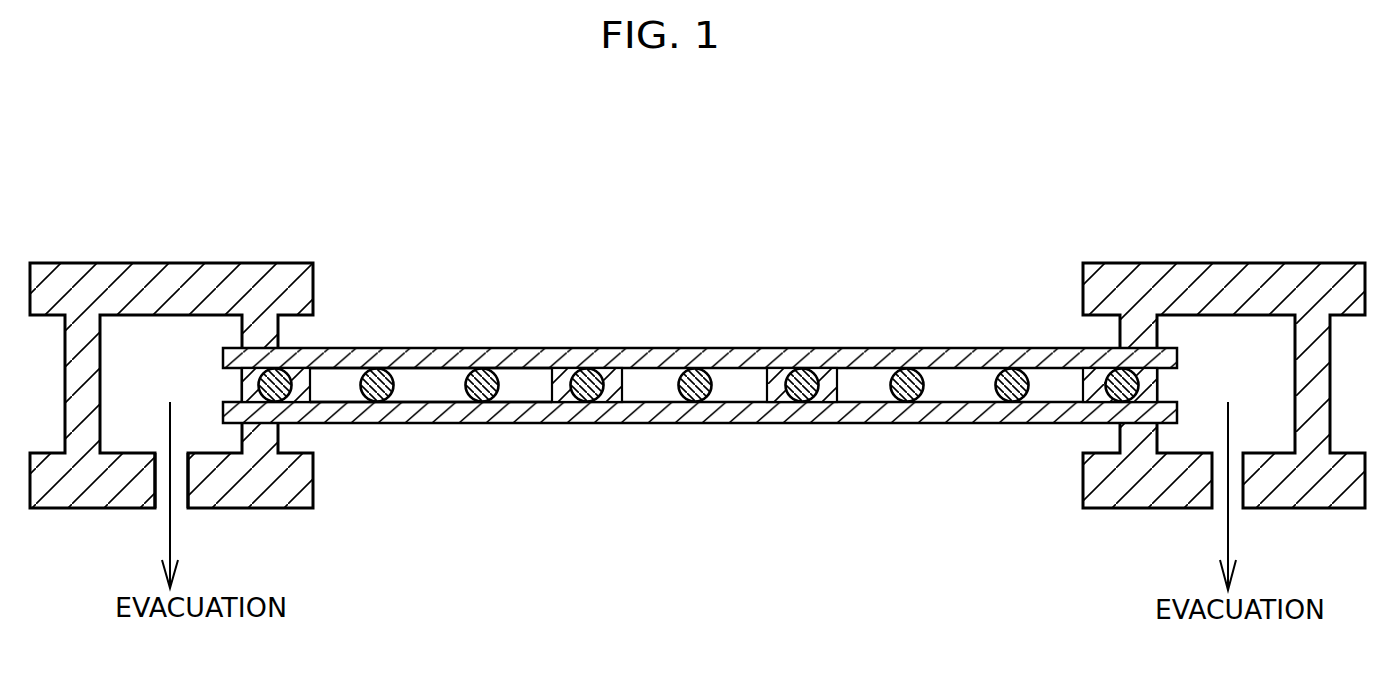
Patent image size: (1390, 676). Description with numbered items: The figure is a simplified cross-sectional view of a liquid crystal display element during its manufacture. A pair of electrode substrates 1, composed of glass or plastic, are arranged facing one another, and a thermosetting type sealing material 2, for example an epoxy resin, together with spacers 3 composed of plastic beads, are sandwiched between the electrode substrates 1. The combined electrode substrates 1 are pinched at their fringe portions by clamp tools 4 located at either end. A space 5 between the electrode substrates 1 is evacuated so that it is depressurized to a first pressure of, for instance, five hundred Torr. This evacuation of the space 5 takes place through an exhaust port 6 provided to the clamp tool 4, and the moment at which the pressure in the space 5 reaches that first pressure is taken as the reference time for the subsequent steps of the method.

The electrode substrates 1 is at (457, 357).
The sealing material 2 is at (611, 358).
The spacers 3 is at (906, 371).
The clamp tools 4 is at (265, 273).
The space 5 is at (526, 393).
The exhaust port 6 is at (183, 488).